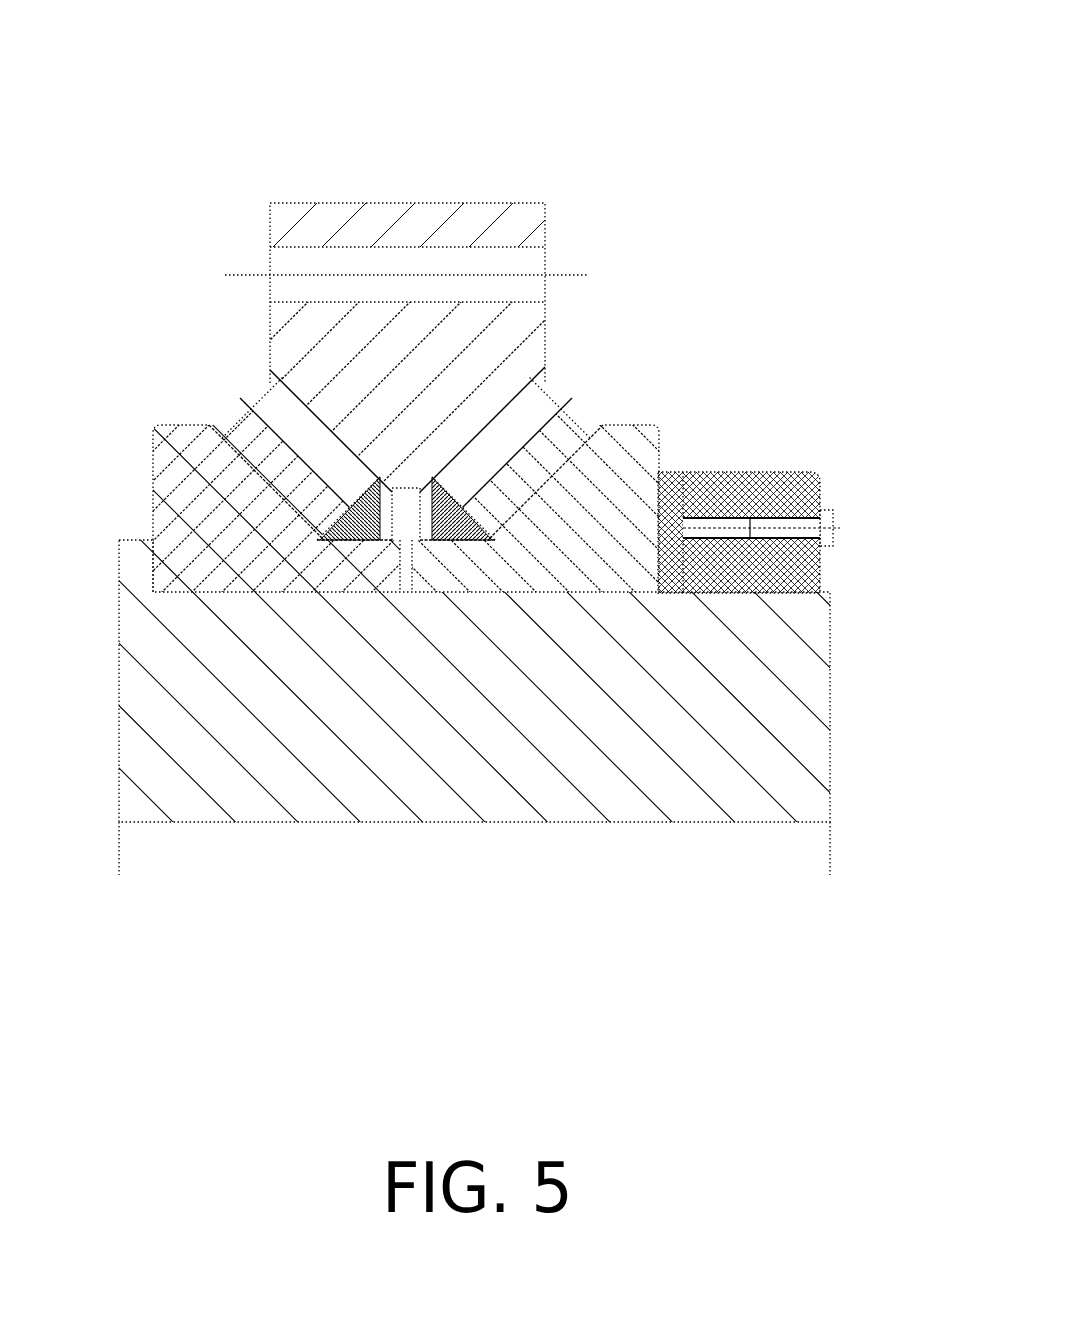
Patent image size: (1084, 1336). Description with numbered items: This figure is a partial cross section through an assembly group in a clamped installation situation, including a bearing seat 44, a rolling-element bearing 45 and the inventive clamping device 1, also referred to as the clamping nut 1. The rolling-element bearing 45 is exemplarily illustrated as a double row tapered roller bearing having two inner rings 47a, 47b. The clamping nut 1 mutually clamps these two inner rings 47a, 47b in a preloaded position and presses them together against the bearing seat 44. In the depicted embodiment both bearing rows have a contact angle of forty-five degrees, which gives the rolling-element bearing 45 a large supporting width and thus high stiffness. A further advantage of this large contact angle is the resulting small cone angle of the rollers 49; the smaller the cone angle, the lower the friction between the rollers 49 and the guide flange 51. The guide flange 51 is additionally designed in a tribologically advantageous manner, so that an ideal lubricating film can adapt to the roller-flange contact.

The clamping device 1 is at (759, 314).
The bearing seat 44 is at (140, 573).
The rolling-element bearing 45 is at (405, 213).
The inner ring 47a is at (240, 552).
The inner ring 47b is at (568, 552).
The rollers 49 is at (265, 427).
The guide flange 51 is at (223, 443).